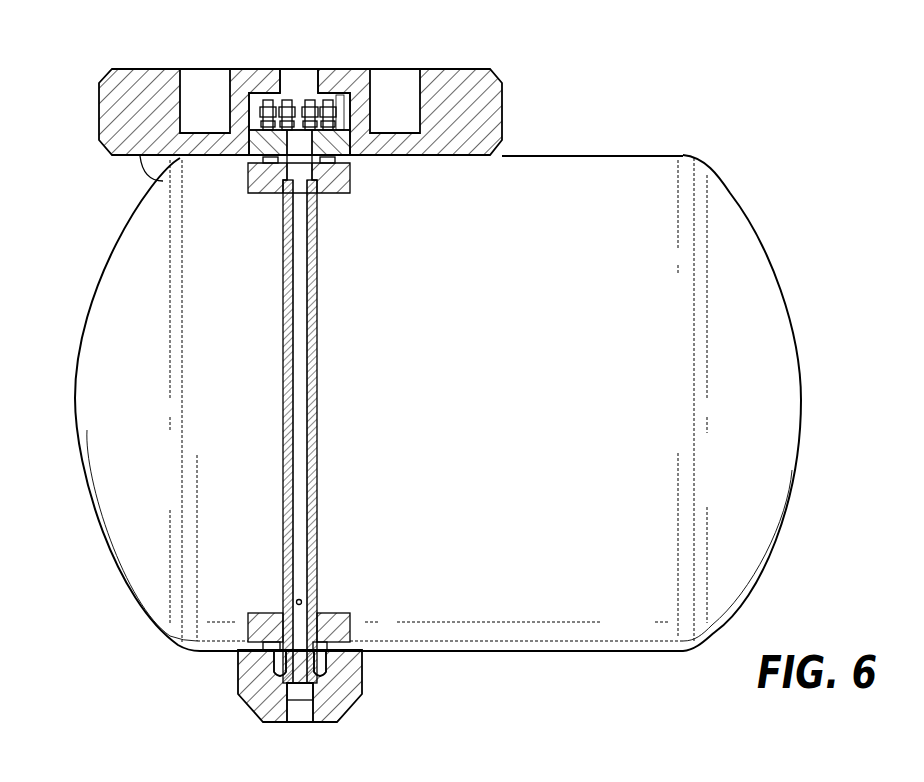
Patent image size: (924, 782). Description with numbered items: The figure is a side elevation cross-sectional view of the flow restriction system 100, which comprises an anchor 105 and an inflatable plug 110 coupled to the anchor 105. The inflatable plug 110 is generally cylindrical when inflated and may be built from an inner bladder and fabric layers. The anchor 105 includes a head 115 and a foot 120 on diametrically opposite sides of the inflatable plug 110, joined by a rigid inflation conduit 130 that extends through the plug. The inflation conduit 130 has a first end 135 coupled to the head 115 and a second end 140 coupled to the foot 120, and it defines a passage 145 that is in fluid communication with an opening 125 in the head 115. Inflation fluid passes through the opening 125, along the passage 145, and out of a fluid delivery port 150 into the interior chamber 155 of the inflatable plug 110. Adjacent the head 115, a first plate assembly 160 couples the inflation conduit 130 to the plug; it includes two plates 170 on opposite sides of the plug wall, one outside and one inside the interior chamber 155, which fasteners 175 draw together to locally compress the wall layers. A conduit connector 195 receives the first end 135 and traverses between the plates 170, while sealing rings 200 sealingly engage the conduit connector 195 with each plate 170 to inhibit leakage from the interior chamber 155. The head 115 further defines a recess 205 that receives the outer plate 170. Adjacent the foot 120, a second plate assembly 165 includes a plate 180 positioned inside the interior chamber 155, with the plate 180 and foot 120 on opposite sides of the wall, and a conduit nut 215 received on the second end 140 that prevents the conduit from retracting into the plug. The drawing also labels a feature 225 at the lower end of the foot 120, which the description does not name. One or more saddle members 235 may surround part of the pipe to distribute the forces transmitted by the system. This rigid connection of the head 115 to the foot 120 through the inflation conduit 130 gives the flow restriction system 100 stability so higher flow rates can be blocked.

The flow restriction system 100 is at (467, 368).
The anchor 105 is at (302, 149).
The inflatable plug 110 is at (757, 378).
The head 115 is at (493, 108).
The foot 120 is at (255, 690).
The opening 125 is at (298, 76).
The inflation conduit 130 is at (318, 352).
The first end 135 is at (327, 196).
The second end 140 is at (337, 684).
The passage 145 is at (310, 443).
The fluid delivery port 150 is at (294, 590).
The interior chamber 155 is at (593, 190).
The first plate assembly 160 is at (235, 164).
The second plate assembly 165 is at (357, 611).
The plates 170 is at (328, 132).
The fasteners 175 is at (272, 86).
The plate 180 is at (262, 613).
The conduit connector 195 is at (297, 176).
The sealing rings 200 is at (350, 167).
The recess 205 is at (345, 92).
The conduit nut 215 is at (250, 652).
The outlet opening 225 is at (323, 712).
The saddle members 235 is at (143, 175).